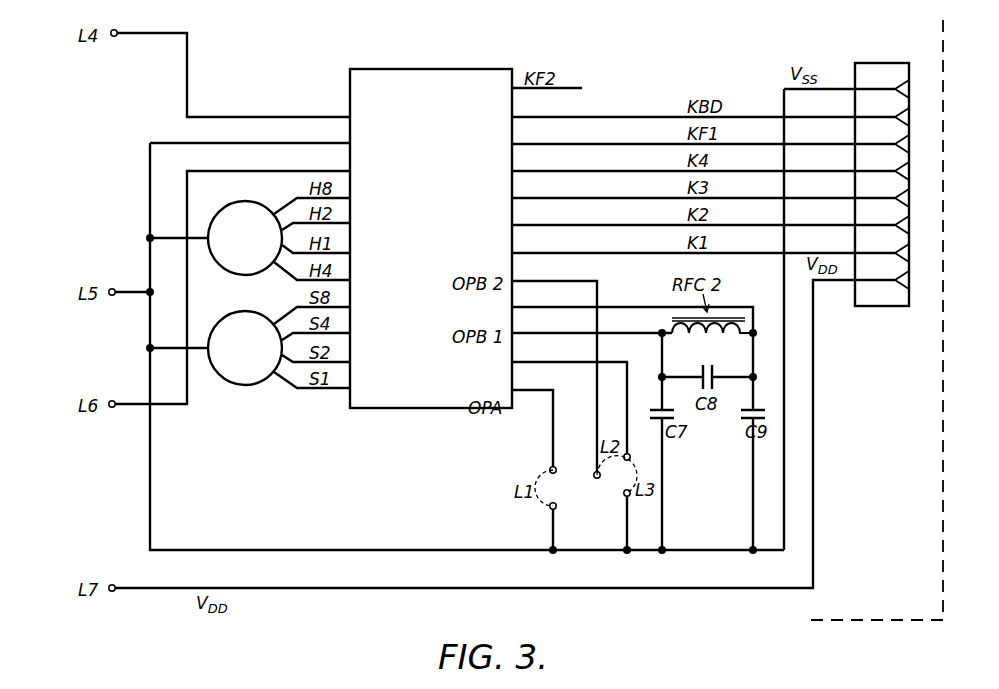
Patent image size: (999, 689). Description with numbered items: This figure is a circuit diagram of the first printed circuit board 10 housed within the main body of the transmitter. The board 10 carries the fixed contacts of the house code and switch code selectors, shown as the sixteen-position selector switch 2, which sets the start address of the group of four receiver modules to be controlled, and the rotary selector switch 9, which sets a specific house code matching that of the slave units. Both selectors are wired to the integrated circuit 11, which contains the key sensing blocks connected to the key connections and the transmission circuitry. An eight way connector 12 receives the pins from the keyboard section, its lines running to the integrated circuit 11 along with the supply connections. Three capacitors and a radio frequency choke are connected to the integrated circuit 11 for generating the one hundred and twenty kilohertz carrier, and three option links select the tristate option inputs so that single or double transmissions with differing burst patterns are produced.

The selector switch 2 is at (252, 360).
The rotary selector switch 9 is at (252, 250).
The printed circuit board 10 is at (950, 517).
The integrated circuit 11 is at (430, 58).
The eight way connector 12 is at (888, 56).